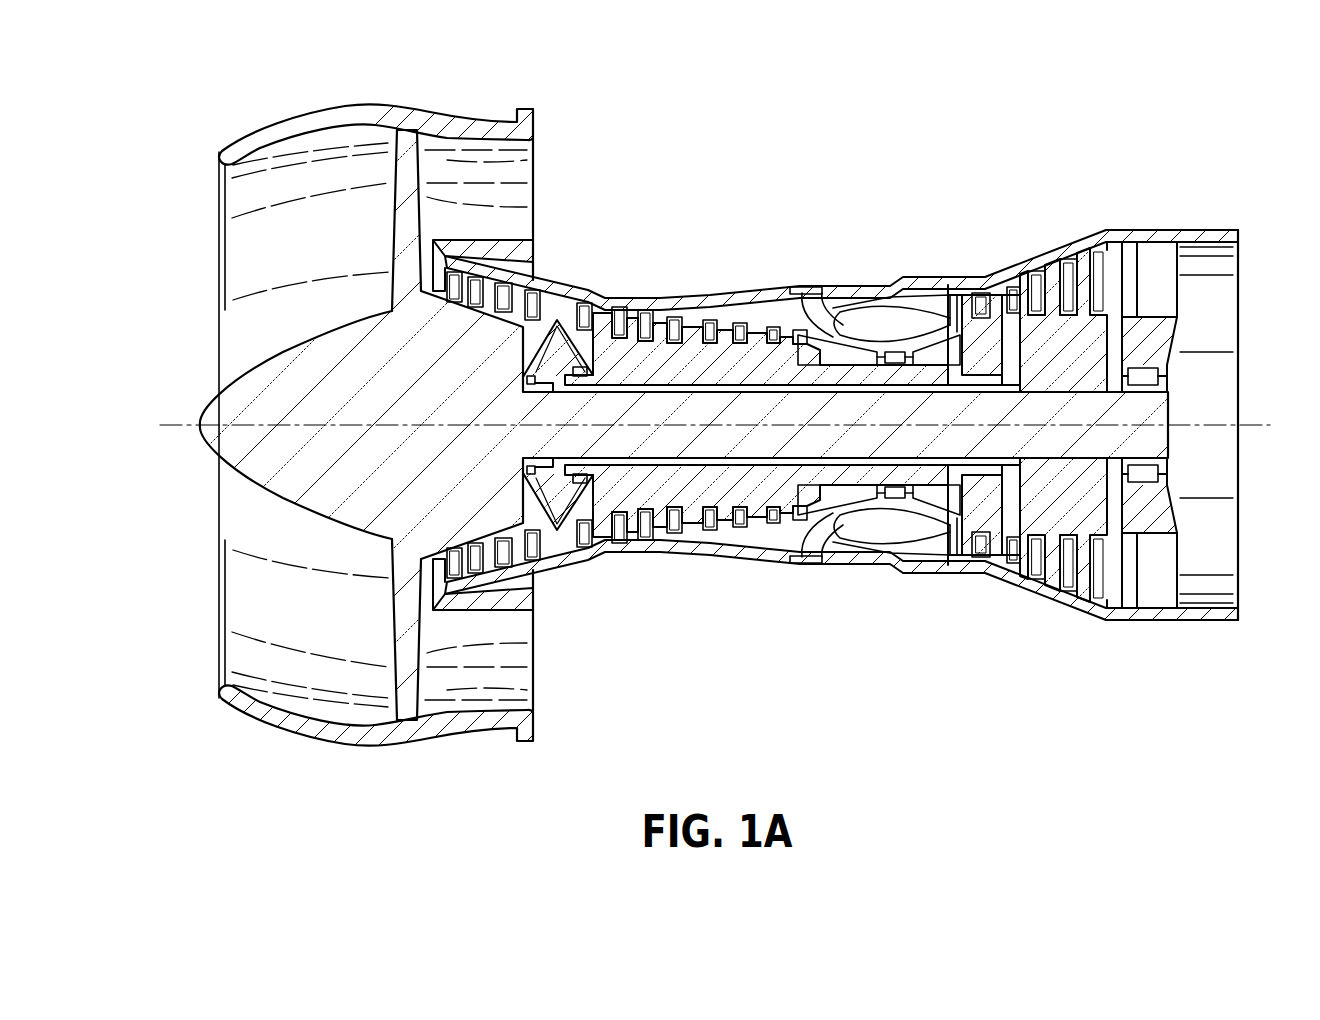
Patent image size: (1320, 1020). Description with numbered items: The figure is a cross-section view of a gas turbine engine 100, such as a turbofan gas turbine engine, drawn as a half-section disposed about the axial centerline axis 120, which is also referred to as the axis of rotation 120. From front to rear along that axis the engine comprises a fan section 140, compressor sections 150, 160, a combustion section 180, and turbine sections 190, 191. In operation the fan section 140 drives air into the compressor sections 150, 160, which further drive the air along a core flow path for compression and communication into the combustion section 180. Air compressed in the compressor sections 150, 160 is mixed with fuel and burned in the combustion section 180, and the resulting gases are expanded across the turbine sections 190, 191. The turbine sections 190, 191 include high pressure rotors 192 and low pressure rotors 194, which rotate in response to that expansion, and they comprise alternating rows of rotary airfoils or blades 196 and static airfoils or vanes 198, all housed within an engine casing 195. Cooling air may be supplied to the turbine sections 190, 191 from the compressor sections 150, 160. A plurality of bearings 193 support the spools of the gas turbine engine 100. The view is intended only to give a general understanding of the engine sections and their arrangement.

The gas turbine engine 100 is at (660, 510).
The axial centerline axis 120 is at (184, 422).
The fan section 140 is at (423, 182).
The compressor section 150 is at (427, 757).
The compressor section 160 is at (595, 575).
The combustion section 180 is at (820, 590).
The turbine section 190 is at (968, 641).
The turbine section 191 is at (1033, 641).
The high pressure rotor 192 is at (990, 300).
The bearing 193 is at (1163, 373).
The low pressure rotor 194 is at (1110, 337).
The engine casing 195 is at (1125, 235).
The blade 196 is at (1053, 275).
The vane 198 is at (1068, 262).